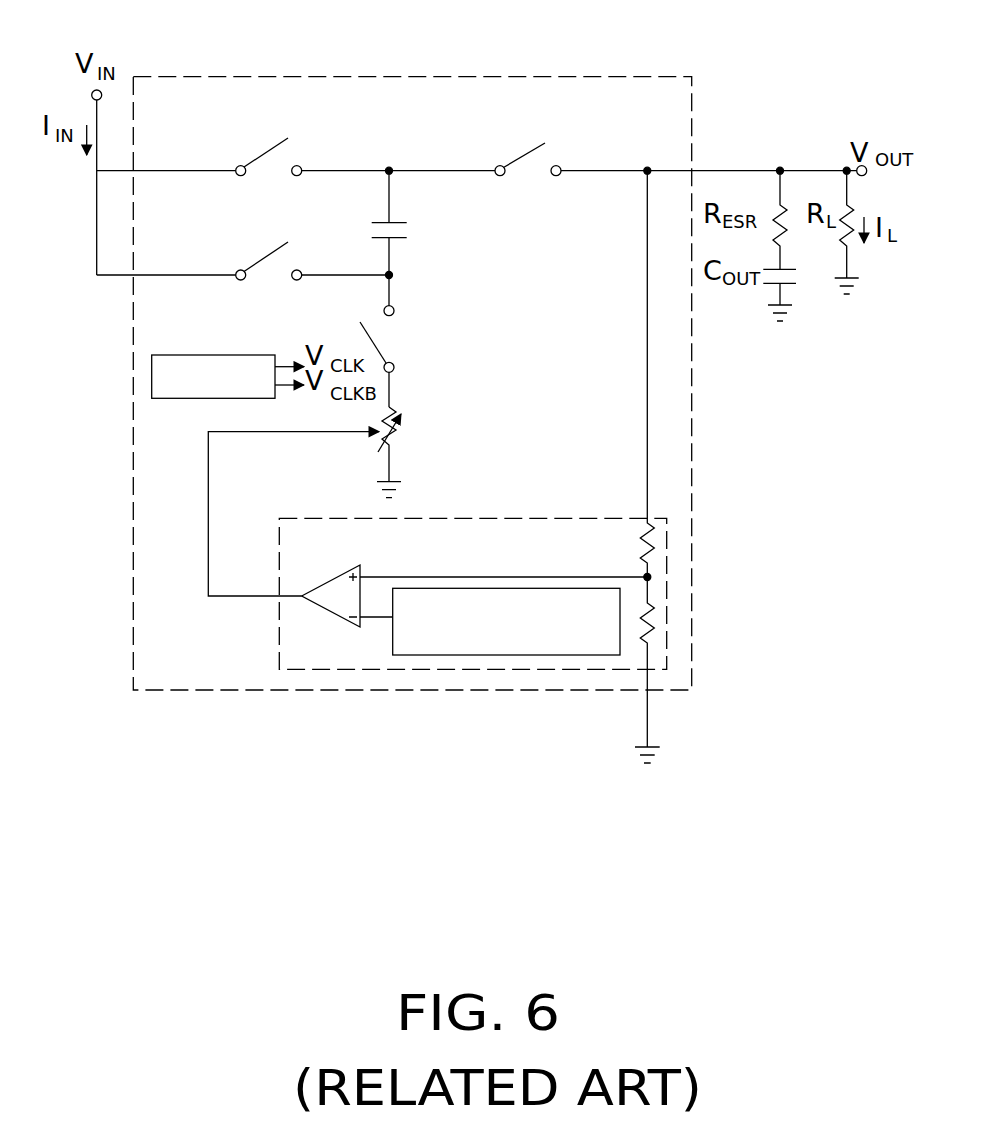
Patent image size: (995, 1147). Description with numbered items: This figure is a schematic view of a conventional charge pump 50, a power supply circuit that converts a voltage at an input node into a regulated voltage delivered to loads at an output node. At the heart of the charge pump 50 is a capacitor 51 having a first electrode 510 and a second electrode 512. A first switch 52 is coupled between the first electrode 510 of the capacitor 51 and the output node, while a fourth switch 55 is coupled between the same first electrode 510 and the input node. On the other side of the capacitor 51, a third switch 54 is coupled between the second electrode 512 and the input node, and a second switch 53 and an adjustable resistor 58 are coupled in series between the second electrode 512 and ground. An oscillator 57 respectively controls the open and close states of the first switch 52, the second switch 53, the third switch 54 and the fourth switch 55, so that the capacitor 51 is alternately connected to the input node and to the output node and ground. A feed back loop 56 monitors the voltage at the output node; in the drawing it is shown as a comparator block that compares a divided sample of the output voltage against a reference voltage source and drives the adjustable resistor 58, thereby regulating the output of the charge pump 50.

The charge pump 50 is at (517, 87).
The capacitor 51 is at (466, 238).
The first electrode 510 is at (400, 222).
The second electrode 512 is at (403, 239).
The first switch 52 is at (532, 148).
The second switch 53 is at (377, 353).
The third switch 54 is at (272, 246).
The fourth switch 55 is at (272, 140).
The feed back loop 56 is at (463, 520).
The oscillator 57 is at (212, 355).
The adjustable resistor 58 is at (397, 433).